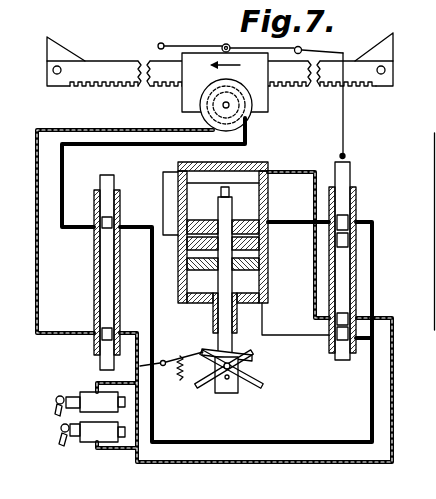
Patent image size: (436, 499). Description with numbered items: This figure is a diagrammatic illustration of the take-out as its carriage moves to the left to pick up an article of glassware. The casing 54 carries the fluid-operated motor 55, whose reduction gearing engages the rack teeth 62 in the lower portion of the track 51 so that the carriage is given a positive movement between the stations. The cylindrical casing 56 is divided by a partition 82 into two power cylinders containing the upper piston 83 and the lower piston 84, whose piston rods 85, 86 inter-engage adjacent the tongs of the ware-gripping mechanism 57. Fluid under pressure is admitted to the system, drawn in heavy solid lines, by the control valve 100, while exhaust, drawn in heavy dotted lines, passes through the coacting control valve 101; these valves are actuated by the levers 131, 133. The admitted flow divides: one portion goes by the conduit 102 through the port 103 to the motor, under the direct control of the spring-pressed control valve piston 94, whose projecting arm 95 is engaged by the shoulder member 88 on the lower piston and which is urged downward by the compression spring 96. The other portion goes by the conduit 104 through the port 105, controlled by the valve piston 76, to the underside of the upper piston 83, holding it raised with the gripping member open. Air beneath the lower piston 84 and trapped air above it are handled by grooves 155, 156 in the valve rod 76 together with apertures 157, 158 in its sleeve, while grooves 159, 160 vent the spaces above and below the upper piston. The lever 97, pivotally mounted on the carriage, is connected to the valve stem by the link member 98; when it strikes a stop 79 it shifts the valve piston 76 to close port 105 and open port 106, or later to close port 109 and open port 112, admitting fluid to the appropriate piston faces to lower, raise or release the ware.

The track 51 is at (113, 61).
The rack teeth 62 is at (90, 84).
The stop 79 is at (63, 57).
The casing 54 is at (271, 98).
The motor 55 is at (247, 115).
The lever 97 is at (182, 43).
The link member 98 is at (344, 117).
The control valve 100 is at (88, 393).
The conduit 104 is at (257, 442).
The port 103 is at (116, 233).
The control valve piston 94 is at (112, 177).
The conduit 102 is at (137, 227).
The upper piston 83 is at (248, 178).
The cylindrical casing 56 is at (268, 198).
The partition 82 is at (205, 228).
The lower piston 84 is at (196, 298).
The piston rod 85 is at (228, 280).
The piston rod 86 is at (240, 322).
The valve piston 76 is at (350, 173).
The groove 160 is at (340, 203).
The port 105 is at (353, 227).
The port 106 is at (357, 235).
The aperture 158 is at (335, 247).
The groove 156 is at (370, 258).
The groove 159 is at (333, 292).
The port 112 is at (356, 318).
The aperture 157 is at (333, 343).
The groove 155 is at (342, 356).
The port 109 is at (358, 340).
The shoulder member 88 is at (242, 346).
The ware-gripping mechanism 57 is at (253, 370).
The projecting arm 95 is at (172, 368).
The compression spring 96 is at (183, 382).
The lever 131 is at (58, 410).
The lever 133 is at (62, 437).
The control valve 101 is at (69, 471).